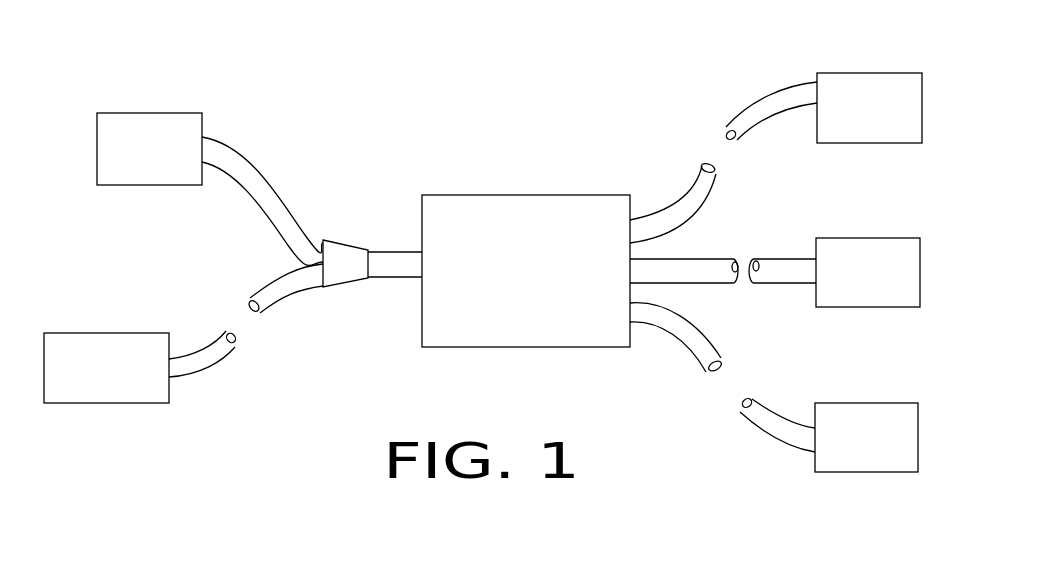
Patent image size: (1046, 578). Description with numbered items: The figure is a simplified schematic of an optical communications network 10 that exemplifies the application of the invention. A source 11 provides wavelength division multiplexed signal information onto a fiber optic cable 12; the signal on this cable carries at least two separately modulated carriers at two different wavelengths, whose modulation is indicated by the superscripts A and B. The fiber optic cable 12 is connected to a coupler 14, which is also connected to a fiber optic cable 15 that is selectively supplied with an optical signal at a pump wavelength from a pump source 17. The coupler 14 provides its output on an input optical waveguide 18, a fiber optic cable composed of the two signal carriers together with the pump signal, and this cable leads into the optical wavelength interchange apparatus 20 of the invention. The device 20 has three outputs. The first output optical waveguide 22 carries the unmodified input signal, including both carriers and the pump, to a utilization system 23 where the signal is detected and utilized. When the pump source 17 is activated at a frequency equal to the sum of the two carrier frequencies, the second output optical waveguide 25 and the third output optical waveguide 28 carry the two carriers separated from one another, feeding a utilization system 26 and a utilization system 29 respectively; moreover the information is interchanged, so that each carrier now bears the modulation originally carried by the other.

The optical communications network 10 is at (374, 121).
The source 11 is at (135, 403).
The fiber optic cable 12 is at (298, 292).
The coupler 14 is at (347, 243).
The fiber optic cable 15 is at (280, 197).
The pump source 17 is at (160, 113).
The input optical waveguide 18 is at (393, 280).
The optical wavelength interchange apparatus 20 is at (493, 195).
The first output optical waveguide 22 is at (700, 258).
The utilization system 23 is at (868, 238).
The second output optical waveguide 25 is at (673, 202).
The utilization system 26 is at (868, 73).
The third output optical waveguide 28 is at (677, 340).
The utilization system 29 is at (850, 403).